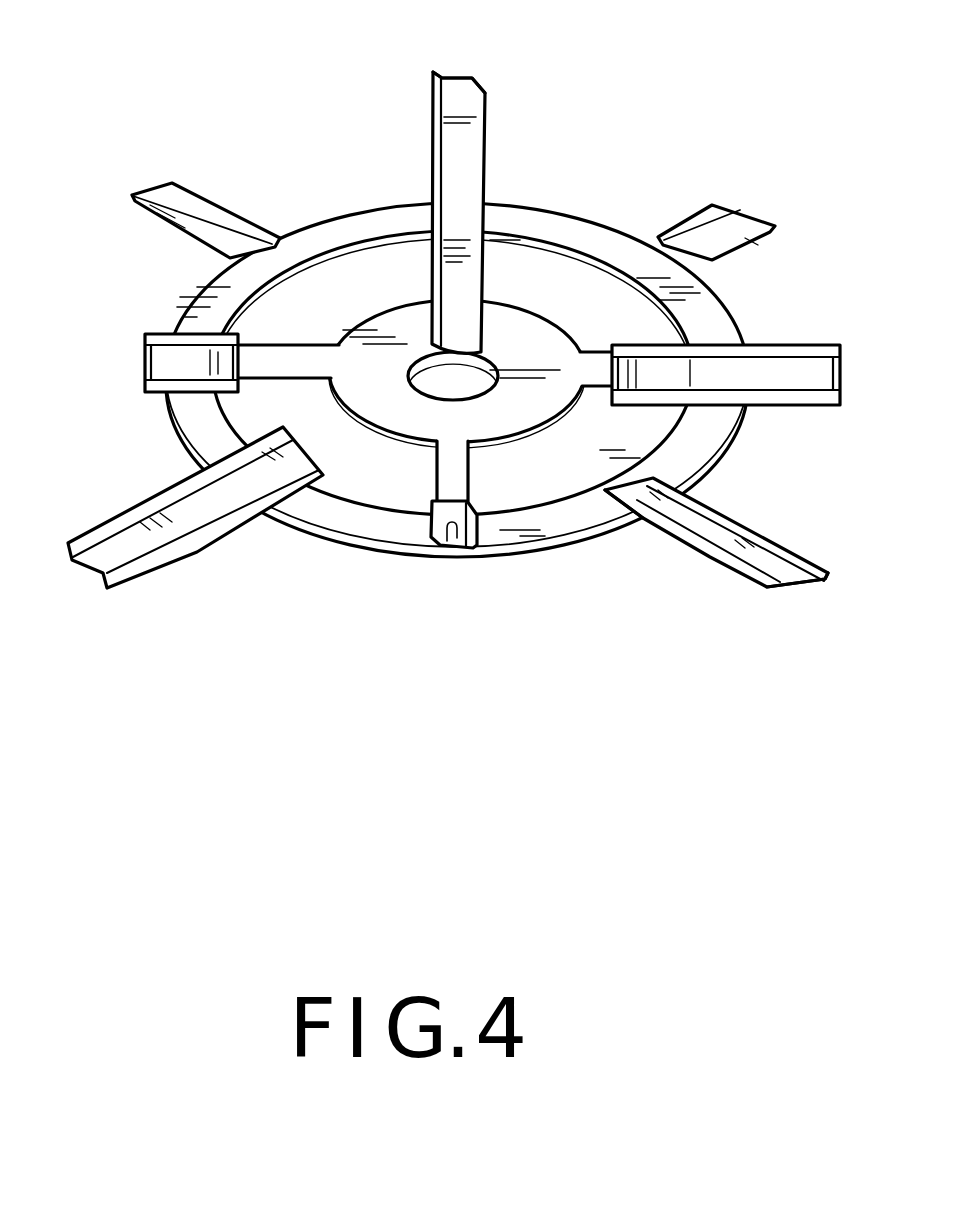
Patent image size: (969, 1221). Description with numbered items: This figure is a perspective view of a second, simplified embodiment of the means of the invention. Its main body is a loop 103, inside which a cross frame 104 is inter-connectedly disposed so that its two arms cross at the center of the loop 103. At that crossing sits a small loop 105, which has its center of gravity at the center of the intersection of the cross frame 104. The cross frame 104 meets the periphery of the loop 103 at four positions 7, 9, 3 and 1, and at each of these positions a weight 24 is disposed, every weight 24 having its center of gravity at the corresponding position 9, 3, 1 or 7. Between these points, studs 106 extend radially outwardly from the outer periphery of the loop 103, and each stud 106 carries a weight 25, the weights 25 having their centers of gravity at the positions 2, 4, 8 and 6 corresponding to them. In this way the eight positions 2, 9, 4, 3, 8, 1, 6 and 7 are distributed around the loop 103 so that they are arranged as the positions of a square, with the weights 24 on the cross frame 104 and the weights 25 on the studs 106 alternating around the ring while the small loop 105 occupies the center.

The position 1 is at (442, 547).
The position 2 is at (720, 227).
The position 3 is at (190, 363).
The position 4 is at (210, 218).
The position 6 is at (712, 525).
The position 7 is at (727, 375).
The position 8 is at (198, 508).
The position 9 is at (455, 218).
The weight 24 is at (457, 76).
The weight 25 is at (802, 542).
The loop 103 is at (617, 252).
The cross frame 104 is at (418, 466).
The small loop 105 is at (517, 417).
The stud 106 is at (647, 520).